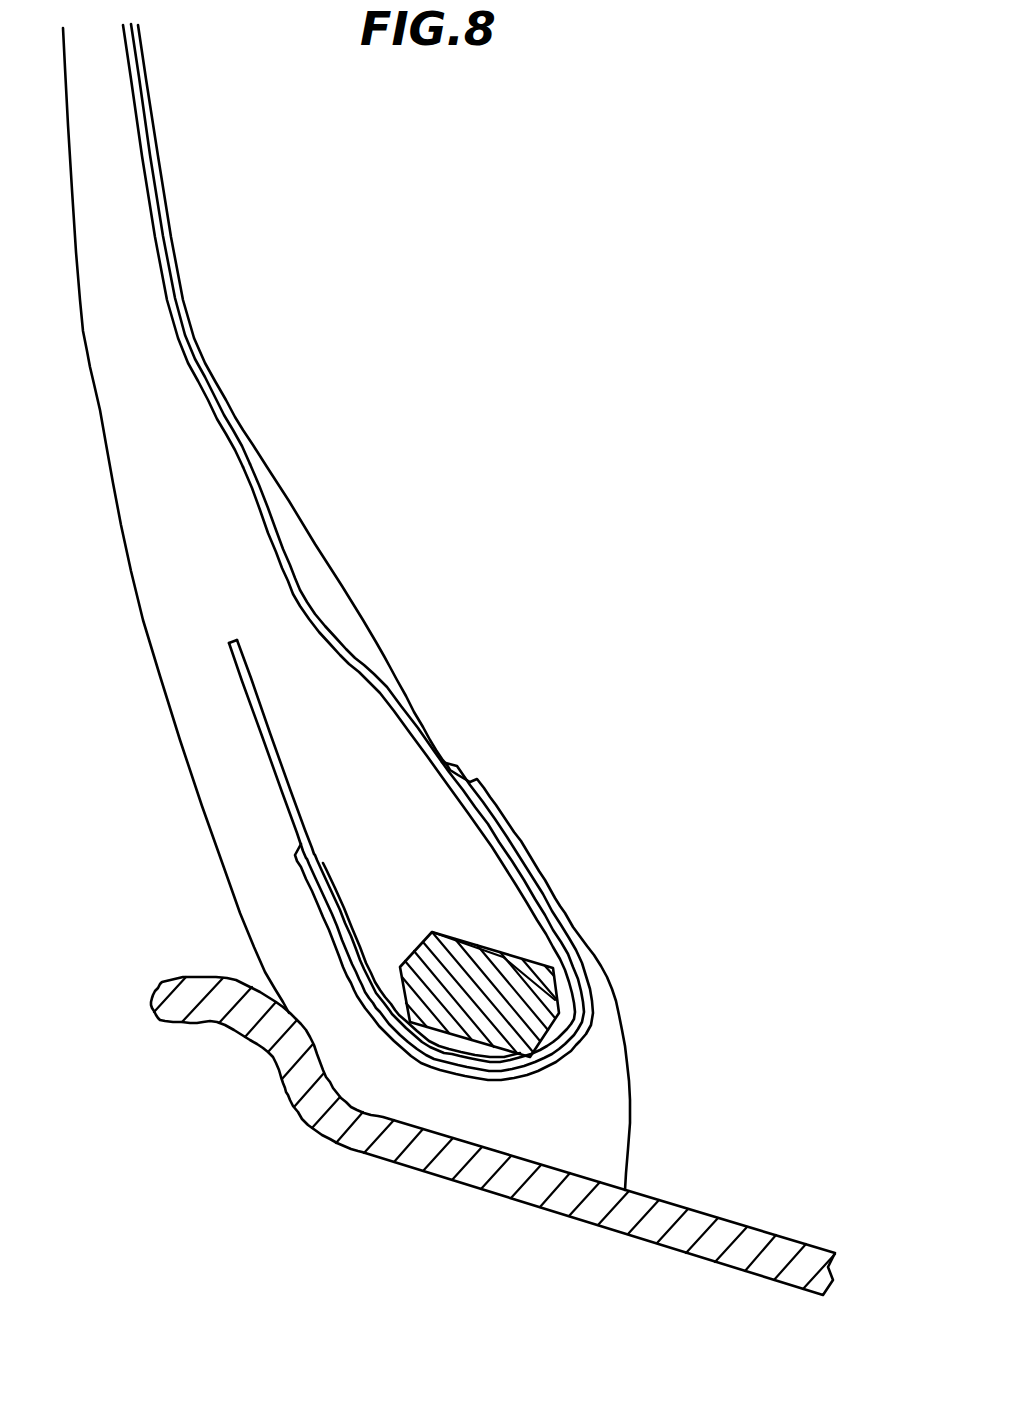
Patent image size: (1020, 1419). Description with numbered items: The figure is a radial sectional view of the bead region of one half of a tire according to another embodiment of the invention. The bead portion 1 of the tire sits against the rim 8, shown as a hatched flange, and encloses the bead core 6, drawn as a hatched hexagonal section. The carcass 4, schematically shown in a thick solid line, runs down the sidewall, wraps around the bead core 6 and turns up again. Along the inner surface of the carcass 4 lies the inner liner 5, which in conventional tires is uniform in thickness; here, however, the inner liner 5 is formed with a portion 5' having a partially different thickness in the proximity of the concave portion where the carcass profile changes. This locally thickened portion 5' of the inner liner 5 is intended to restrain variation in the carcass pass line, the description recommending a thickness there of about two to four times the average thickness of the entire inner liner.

The bead portion 1 is at (257, 918).
The carcass 4 is at (243, 467).
The inner liner 5 is at (186, 245).
The portion having partially different thickness 5' is at (411, 772).
The bead core 6 is at (543, 997).
The rim 8 is at (693, 1217).